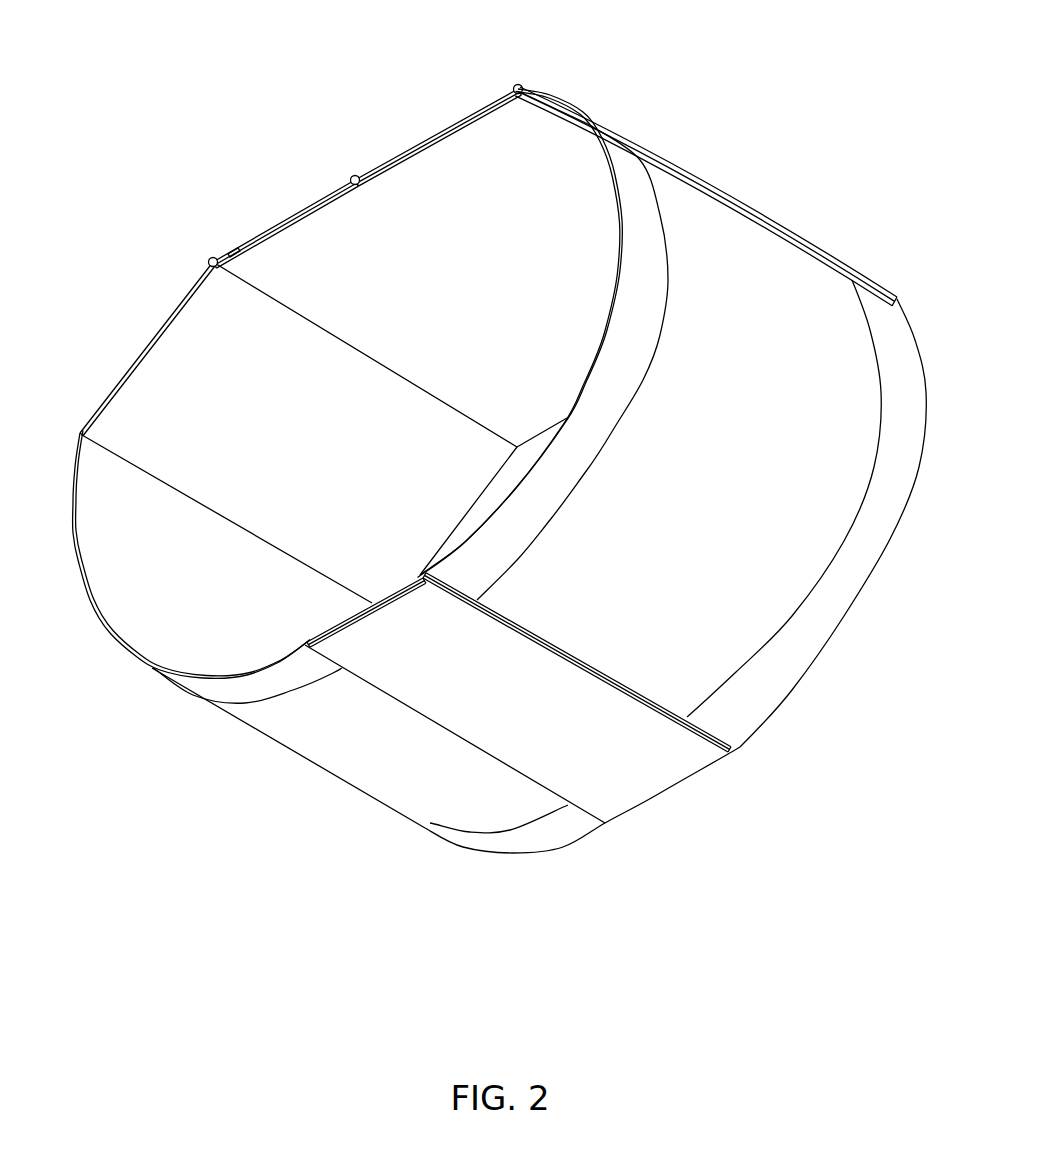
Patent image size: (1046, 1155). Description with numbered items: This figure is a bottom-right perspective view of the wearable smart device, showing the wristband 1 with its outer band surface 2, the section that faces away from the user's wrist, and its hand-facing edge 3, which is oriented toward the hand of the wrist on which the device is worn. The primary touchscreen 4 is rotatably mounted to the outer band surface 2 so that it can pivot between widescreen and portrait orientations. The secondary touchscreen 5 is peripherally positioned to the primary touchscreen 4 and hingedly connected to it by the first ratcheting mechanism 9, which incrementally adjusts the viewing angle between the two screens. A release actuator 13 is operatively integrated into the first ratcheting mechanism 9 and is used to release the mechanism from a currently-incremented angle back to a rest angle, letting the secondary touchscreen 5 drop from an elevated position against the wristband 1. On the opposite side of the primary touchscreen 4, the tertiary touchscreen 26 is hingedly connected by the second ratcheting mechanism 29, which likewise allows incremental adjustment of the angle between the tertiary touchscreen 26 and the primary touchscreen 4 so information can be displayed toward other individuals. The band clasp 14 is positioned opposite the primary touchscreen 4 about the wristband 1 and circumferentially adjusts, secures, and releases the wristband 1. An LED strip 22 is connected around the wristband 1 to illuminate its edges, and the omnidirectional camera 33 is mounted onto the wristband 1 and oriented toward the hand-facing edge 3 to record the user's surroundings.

The wristband 1 is at (181, 606).
The outer band surface 2 is at (707, 213).
The hand-facing edge 3 is at (110, 637).
The primary touchscreen 4 is at (450, 128).
The secondary touchscreen 5 is at (137, 393).
The first ratcheting mechanism 9 is at (198, 256).
The release actuator 13 is at (232, 251).
The band clasp 14 is at (505, 726).
The LED strip 22 is at (578, 472).
The tertiary touchscreen 26 is at (787, 227).
The second ratcheting mechanism 29 is at (519, 70).
The omnidirectional camera 33 is at (354, 177).